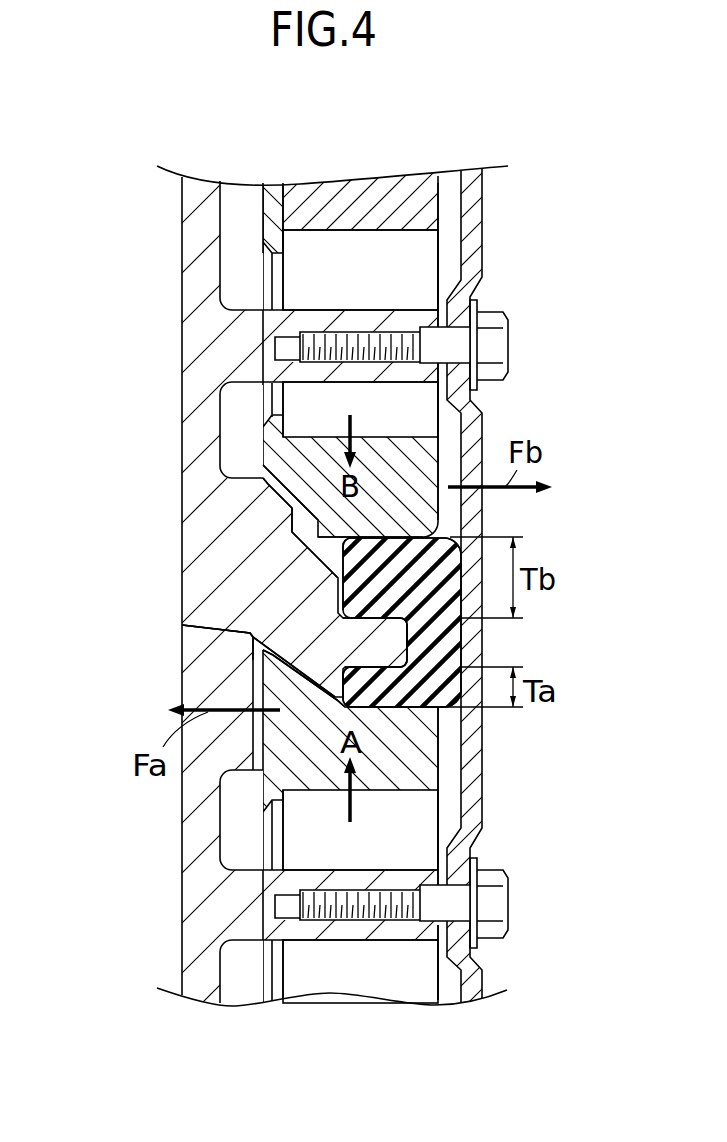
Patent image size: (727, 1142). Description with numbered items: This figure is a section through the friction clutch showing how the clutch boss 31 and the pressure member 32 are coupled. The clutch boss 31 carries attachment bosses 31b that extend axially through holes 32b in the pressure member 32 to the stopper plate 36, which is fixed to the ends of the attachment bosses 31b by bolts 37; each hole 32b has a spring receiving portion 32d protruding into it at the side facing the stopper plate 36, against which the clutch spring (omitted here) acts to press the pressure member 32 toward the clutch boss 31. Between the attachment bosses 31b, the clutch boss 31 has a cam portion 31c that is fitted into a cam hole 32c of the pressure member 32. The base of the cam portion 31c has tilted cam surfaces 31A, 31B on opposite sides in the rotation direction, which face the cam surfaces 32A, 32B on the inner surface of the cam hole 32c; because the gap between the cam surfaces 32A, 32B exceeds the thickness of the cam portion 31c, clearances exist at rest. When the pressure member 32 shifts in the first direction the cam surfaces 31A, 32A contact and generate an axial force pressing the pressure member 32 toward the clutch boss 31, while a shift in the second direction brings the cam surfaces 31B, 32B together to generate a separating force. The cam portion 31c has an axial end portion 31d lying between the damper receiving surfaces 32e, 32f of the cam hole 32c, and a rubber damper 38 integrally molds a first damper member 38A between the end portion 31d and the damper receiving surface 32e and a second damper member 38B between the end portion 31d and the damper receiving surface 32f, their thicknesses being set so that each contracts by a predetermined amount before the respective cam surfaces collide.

The clutch boss 31 is at (172, 274).
The cam surface 31A is at (262, 690).
The cam surface 31B is at (275, 474).
The attachment boss 31b is at (373, 328).
The cam portion 31c is at (182, 626).
The end portion 31d is at (423, 643).
The pressure member 32 is at (252, 218).
The cam surface 32A is at (230, 646).
The cam surface 32B is at (292, 497).
The hole 32b is at (423, 263).
The cam hole 32c is at (330, 545).
The spring receiving portion 32d is at (290, 241).
The damper receiving surface 32e is at (393, 708).
The damper receiving surface 32f is at (379, 548).
The stopper plate 36 is at (479, 210).
The bolt 37 is at (505, 347).
The damper 38 is at (330, 567).
The first damper member 38A is at (438, 718).
The second damper member 38B is at (428, 538).